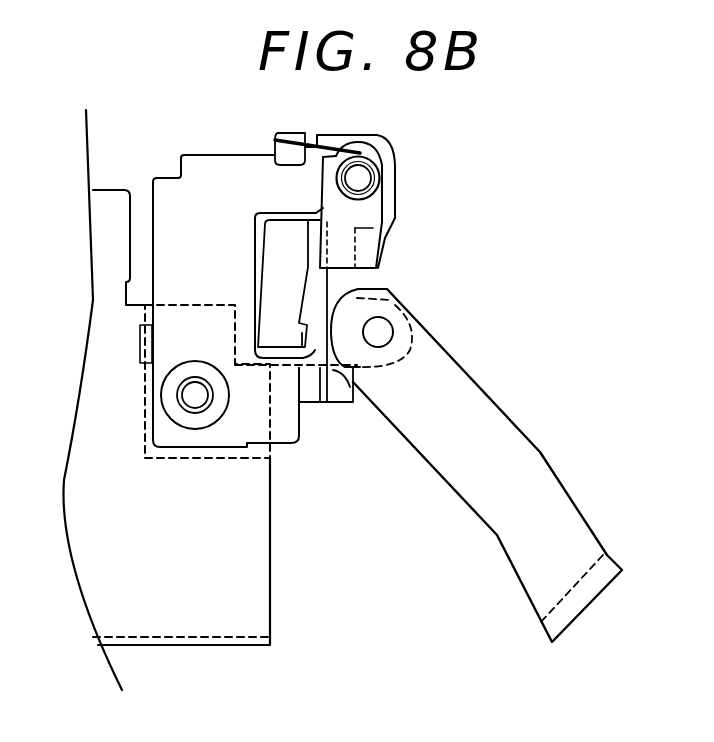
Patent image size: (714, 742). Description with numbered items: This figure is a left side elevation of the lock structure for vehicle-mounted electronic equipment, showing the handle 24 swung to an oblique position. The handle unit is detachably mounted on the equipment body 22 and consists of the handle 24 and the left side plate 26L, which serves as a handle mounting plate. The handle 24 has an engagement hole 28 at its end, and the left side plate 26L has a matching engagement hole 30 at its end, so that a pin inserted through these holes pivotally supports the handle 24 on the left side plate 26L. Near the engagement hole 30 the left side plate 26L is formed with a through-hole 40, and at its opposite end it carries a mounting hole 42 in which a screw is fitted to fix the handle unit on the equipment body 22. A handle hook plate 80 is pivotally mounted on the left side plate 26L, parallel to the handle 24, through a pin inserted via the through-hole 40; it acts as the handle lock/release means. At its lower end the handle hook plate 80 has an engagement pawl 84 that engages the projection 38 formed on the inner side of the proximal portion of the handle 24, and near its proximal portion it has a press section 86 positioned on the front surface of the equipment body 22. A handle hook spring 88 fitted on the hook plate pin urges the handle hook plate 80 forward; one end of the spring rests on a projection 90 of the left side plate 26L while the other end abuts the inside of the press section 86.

The body 22 is at (262, 618).
The handle 24 is at (448, 457).
The left side plate 26L is at (158, 450).
The engagement hole 28 is at (383, 332).
The engagement hole 30 is at (390, 313).
The projection 38 is at (347, 373).
The through-hole 40 is at (362, 153).
The mounting hole 42 is at (198, 397).
The handle hook plate 80 is at (277, 237).
The engagement pawl 84 is at (318, 370).
The press section 86 is at (387, 228).
The handle hook spring 88 is at (383, 170).
The projection 90 is at (278, 135).